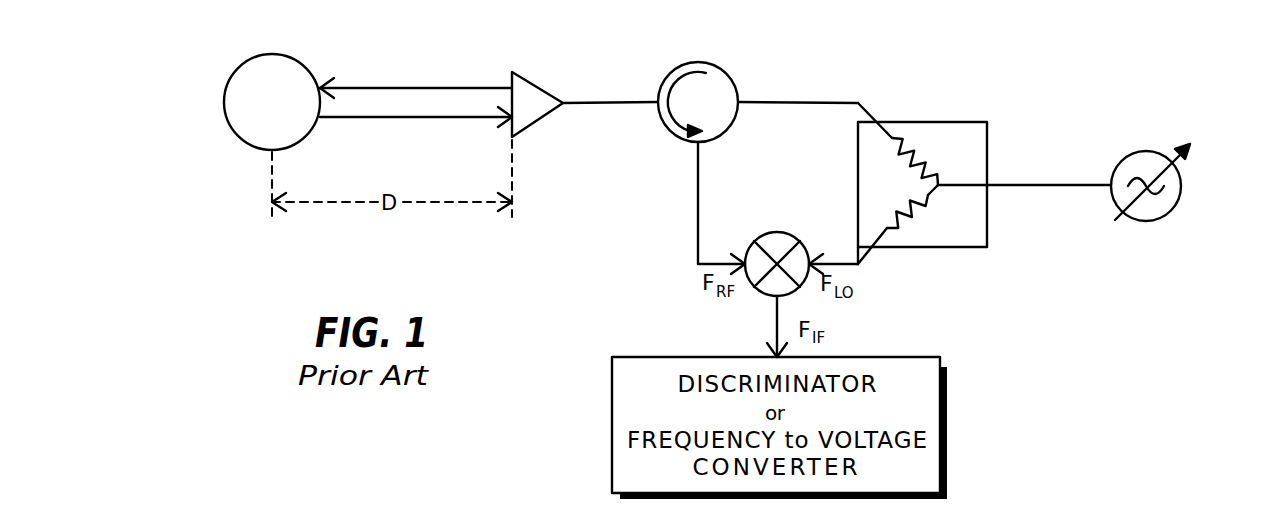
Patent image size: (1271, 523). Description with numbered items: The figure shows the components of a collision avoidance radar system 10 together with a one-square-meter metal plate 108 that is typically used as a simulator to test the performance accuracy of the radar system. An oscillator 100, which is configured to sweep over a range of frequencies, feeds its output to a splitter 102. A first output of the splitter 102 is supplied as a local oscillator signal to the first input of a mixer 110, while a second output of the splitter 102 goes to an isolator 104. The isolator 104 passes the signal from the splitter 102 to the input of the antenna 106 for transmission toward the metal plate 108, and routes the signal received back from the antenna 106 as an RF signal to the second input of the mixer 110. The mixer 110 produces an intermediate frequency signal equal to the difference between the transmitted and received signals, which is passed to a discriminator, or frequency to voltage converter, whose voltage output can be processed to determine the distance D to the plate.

The collision avoidance radar system 10 is at (812, 72).
The oscillator 100 is at (1160, 220).
The splitter 102 is at (947, 120).
The isolator 104 is at (720, 68).
The antenna 106 is at (535, 80).
The metal plate 108 is at (230, 79).
The mixer 110 is at (778, 232).